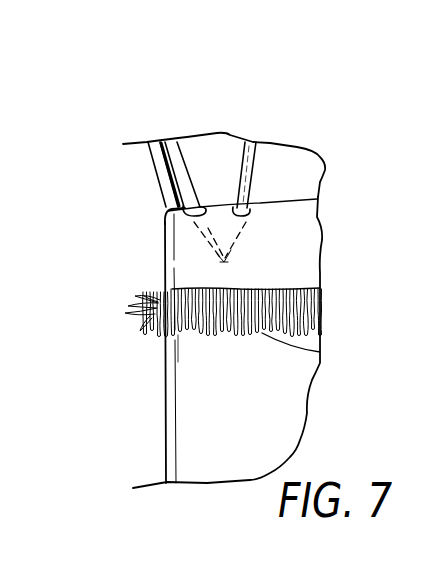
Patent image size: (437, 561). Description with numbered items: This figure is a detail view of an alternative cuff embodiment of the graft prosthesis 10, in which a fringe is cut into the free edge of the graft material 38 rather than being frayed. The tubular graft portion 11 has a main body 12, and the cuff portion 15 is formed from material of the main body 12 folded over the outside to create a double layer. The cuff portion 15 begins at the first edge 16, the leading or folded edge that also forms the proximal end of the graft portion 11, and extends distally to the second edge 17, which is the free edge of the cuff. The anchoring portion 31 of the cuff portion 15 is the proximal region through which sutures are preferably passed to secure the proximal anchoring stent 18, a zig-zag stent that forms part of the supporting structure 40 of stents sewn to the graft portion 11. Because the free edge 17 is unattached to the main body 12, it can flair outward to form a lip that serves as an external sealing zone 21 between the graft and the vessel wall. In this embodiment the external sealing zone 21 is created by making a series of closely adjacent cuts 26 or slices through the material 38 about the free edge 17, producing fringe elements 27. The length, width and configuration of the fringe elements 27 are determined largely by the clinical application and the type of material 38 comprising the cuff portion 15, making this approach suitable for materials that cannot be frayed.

The graft prosthesis 10 is at (187, 120).
The graft portion 11 is at (193, 447).
The main body 12 is at (182, 407).
The cuff portion 15 is at (197, 260).
The first edge 16 is at (155, 218).
The second edge 17 is at (155, 342).
The proximal anchoring stent 18 is at (258, 171).
The external sealing zone 21 is at (130, 322).
The cuts 26 is at (290, 288).
The fringe elements 27 is at (320, 352).
The anchoring portion 31 is at (277, 233).
The graft material 38 is at (258, 292).
The supporting structure 40 is at (155, 203).